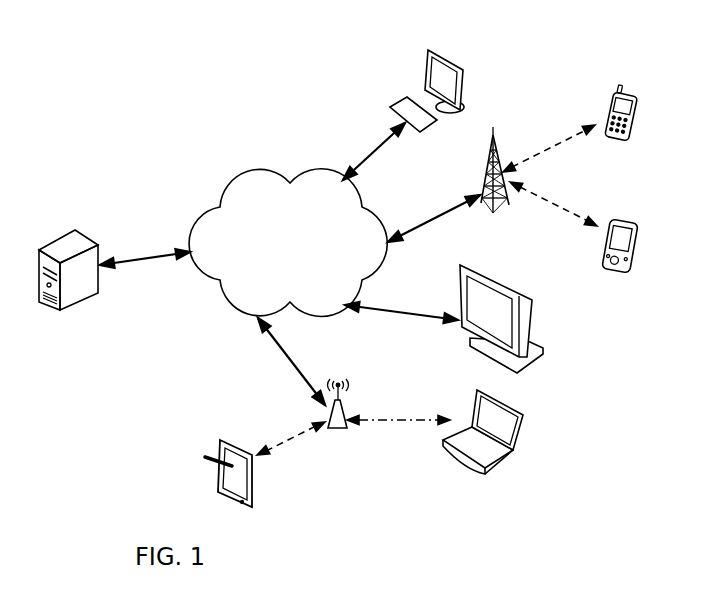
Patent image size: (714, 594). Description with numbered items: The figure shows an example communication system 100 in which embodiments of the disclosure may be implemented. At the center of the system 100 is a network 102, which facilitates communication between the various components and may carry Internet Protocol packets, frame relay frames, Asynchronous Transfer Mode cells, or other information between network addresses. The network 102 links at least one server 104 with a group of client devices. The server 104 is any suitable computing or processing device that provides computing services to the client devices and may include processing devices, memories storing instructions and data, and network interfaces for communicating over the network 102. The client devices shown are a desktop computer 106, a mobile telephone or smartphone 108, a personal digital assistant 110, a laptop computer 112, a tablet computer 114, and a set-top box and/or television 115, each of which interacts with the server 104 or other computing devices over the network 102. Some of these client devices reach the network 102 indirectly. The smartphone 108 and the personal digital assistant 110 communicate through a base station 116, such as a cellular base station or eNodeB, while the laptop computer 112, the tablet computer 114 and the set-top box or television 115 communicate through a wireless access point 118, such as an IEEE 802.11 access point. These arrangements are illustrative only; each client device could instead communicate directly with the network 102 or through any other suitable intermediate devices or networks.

The communication system 100 is at (160, 61).
The network 102 is at (224, 174).
The server 104 is at (52, 243).
The desktop computer 106 is at (425, 55).
The mobile telephone or smartphone 108 is at (635, 97).
The personal digital assistant (PDA) 110 is at (632, 222).
The laptop computer 112 is at (507, 458).
The tablet computer 114 is at (220, 445).
The set-top box and/or television 115 is at (540, 357).
The base station 116 is at (508, 205).
The wireless access point 118 is at (348, 412).